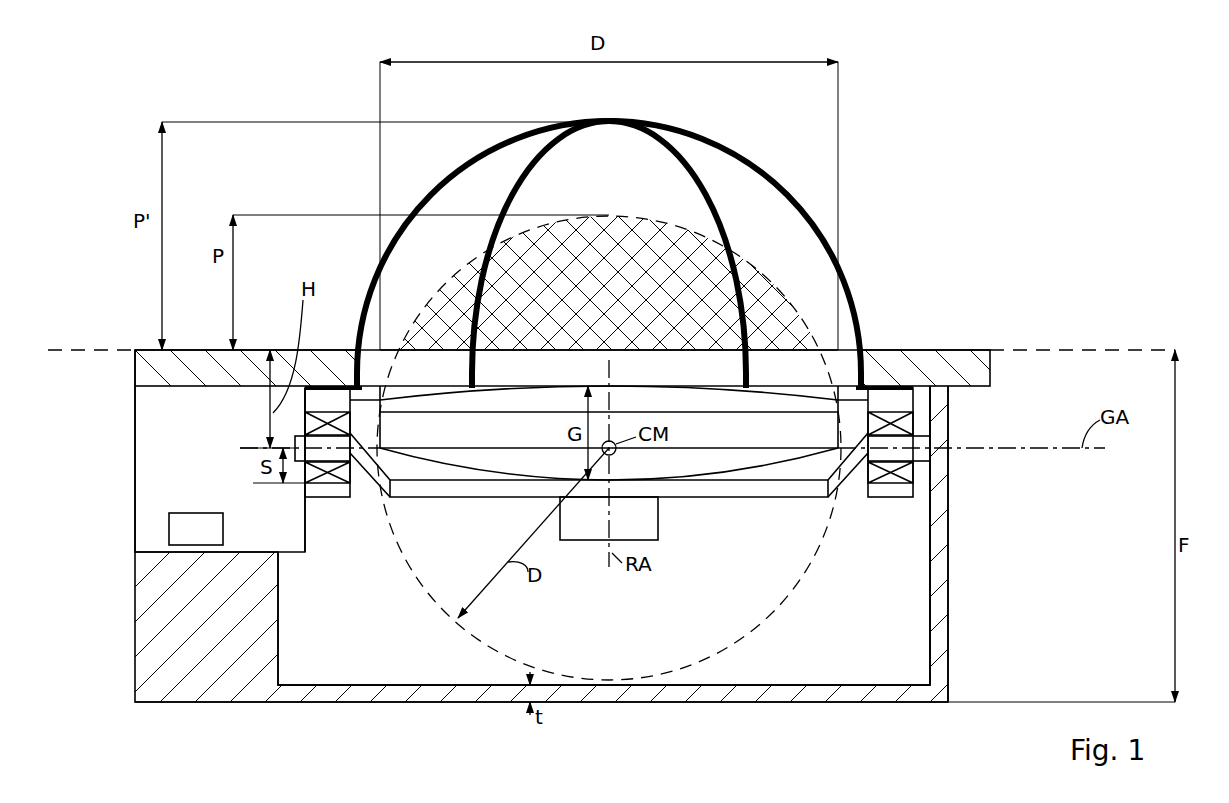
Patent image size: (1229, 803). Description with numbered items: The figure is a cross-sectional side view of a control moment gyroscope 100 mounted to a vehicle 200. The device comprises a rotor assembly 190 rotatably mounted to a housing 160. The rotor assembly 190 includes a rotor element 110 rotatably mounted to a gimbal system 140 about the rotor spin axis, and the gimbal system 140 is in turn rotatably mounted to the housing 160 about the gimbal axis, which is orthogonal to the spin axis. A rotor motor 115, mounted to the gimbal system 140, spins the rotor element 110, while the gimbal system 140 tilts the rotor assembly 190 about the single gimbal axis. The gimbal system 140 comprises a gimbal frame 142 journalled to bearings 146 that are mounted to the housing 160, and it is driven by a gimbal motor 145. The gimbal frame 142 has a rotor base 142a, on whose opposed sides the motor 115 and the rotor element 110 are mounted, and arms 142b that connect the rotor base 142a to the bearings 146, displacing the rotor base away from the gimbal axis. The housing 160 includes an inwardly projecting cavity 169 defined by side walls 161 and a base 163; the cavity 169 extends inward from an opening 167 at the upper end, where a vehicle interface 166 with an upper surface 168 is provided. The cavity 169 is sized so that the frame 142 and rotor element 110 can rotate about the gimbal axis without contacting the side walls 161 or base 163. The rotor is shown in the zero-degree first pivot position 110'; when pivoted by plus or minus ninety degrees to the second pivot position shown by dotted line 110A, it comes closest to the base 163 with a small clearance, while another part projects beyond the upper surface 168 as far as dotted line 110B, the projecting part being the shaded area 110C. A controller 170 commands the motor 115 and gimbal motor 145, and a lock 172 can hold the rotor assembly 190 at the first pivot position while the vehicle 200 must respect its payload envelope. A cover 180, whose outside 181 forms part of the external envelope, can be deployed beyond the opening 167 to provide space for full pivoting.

The control moment gyroscope 100 is at (978, 210).
The rotor element 110 is at (716, 485).
The first pivot position 110' is at (709, 468).
The second pivot position 110A is at (737, 643).
The dotted line 110B is at (808, 320).
The shaded area 110C is at (780, 291).
The rotor motor 115 is at (658, 518).
The gimbal system 140 is at (428, 498).
The gimbal frame 142 is at (544, 597).
The rotor base 142a is at (762, 498).
The arms 142b is at (845, 477).
The gimbal motor 145 is at (182, 488).
The bearings 146 is at (308, 412).
The housing 160 is at (147, 573).
The side walls 161 is at (948, 658).
The base 163 is at (853, 703).
The vehicle interface 166 is at (967, 363).
The opening 167 is at (858, 347).
The upper surface 168 is at (938, 349).
The cavity 169 is at (852, 609).
The controller 170 is at (196, 529).
The lock 172 is at (365, 470).
The cover 180 is at (705, 167).
The outside 181 is at (778, 172).
The rotor assembly 190 is at (980, 458).
The vehicle 200 is at (1158, 350).